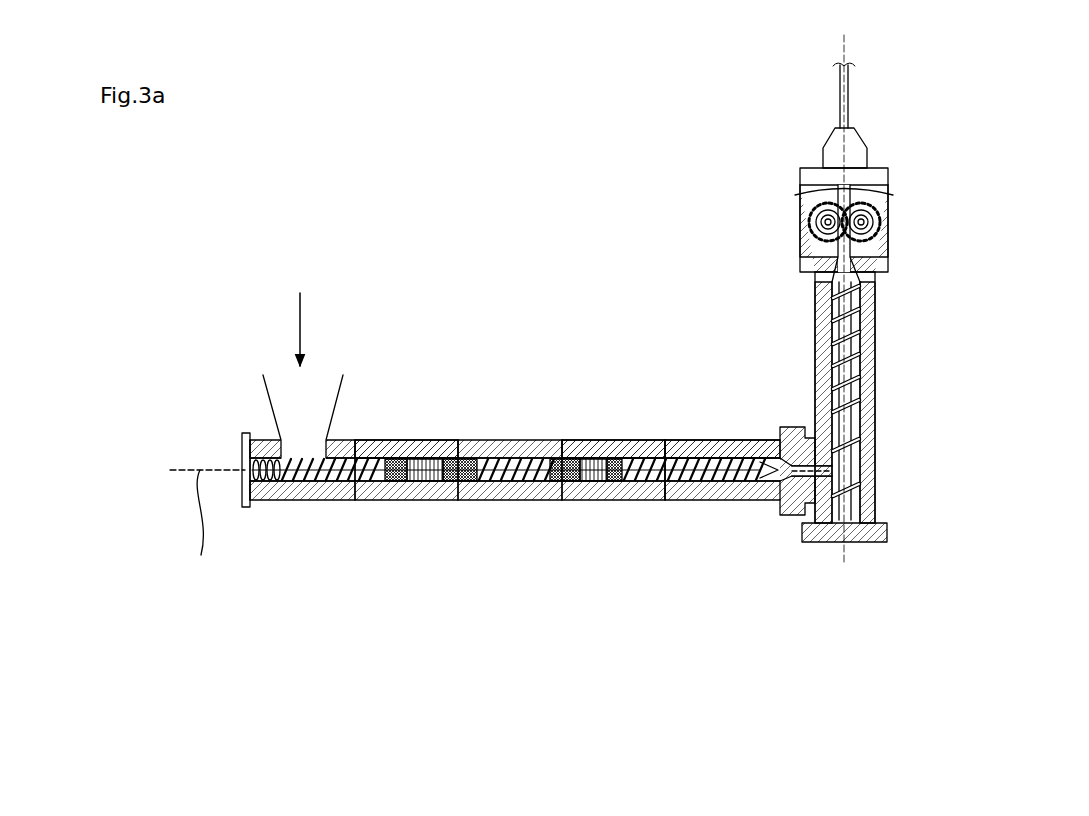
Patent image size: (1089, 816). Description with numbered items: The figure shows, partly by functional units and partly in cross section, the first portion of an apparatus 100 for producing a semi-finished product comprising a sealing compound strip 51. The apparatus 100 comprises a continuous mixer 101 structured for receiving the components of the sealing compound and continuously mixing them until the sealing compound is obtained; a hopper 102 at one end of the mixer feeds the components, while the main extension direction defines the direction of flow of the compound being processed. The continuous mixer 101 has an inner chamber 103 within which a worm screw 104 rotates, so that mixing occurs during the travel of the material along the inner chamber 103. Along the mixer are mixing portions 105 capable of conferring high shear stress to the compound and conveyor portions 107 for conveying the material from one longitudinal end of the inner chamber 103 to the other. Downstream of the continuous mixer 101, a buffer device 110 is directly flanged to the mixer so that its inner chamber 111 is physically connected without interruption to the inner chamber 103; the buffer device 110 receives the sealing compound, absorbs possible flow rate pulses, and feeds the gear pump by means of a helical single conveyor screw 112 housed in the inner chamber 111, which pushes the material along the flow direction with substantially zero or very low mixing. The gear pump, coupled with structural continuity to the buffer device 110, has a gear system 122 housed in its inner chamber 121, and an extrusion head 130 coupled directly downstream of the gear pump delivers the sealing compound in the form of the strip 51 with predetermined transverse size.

The apparatus 100 is at (614, 425).
The continuous mixer 101 is at (520, 352).
The hopper 102 is at (267, 390).
The inner chamber 103 is at (568, 492).
The worm screw 104 is at (612, 438).
The mixing portions 105 is at (443, 492).
The conveyor portions 107 is at (495, 438).
The buffer device 110 is at (795, 330).
The inner chamber 111 is at (860, 422).
The helical single conveyor screw 112 is at (848, 467).
The inner chamber 121 is at (835, 248).
The gear system 122 is at (885, 244).
The extrusion head 130 is at (882, 147).
The sealing compound strip 51 is at (840, 90).